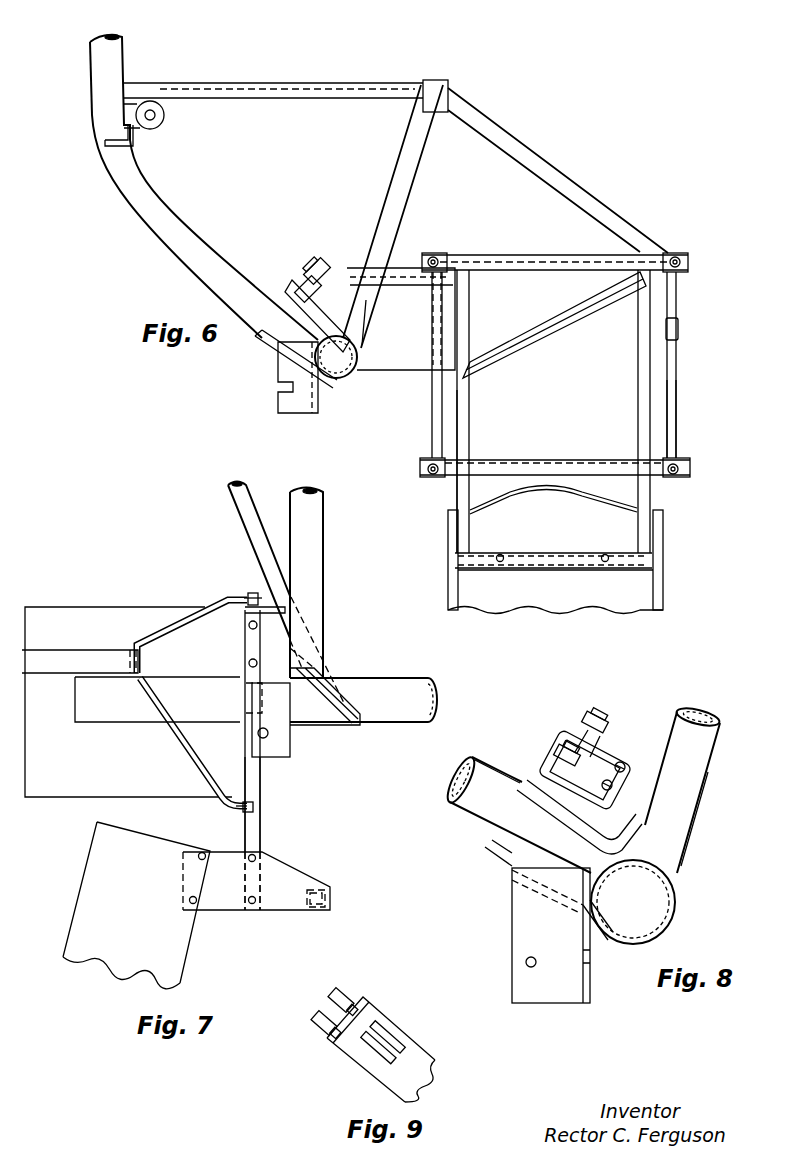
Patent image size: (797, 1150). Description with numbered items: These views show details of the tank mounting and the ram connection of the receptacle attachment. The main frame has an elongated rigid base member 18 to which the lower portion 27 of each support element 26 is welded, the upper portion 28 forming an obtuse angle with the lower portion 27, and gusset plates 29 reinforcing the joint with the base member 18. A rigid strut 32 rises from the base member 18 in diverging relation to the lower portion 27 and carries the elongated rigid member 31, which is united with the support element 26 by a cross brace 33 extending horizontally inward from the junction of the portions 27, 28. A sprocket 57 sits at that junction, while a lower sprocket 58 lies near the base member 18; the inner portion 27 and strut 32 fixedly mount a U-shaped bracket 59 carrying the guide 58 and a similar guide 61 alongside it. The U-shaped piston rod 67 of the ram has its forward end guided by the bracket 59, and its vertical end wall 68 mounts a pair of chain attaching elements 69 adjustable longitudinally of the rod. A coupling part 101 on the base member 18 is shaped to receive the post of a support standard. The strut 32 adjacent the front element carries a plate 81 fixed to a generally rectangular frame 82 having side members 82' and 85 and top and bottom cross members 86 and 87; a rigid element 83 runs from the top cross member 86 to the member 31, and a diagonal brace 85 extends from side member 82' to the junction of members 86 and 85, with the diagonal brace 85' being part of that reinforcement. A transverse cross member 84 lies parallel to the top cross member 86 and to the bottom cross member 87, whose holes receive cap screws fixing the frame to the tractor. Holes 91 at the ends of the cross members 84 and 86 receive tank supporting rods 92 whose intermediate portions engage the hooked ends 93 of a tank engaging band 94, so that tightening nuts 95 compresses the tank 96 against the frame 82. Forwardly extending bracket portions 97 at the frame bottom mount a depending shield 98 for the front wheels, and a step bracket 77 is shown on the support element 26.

In FIG. 6, the base member 18 is at (346, 380).
In FIG. 7, the base member 18 is at (410, 678).
In FIG. 8, the base member 18 is at (676, 900).
In FIG. 7, the support element 26 is at (316, 519).
In FIG. 8, the support element 26 is at (509, 827).
In FIG. 6, the lower portion 27 is at (192, 276).
In FIG. 7, the lower portion 27 is at (323, 592).
In FIG. 8, the lower portion 27 is at (470, 823).
In FIG. 6, the upper portion 28 is at (123, 45).
In FIG. 6, the gusset plate 29 is at (372, 310).
In FIG. 7, the gusset plate 29 is at (330, 668).
In FIG. 8, the gusset plate 29 is at (695, 820).
In FIG. 6, the elongated rigid member 31 is at (441, 80).
In FIG. 6, the strut 32 is at (394, 184).
In FIG. 7, the strut 32 is at (246, 522).
In FIG. 8, the strut 32 is at (712, 752).
In FIG. 6, the cross brace 33 is at (318, 98).
In FIG. 6, the sprocket 57 is at (166, 116).
In FIG. 6, the sprocket 58 is at (312, 262).
In FIG. 8, the sprocket 58 is at (580, 720).
In FIG. 8, the U-shaped bracket 59 is at (630, 750).
In FIG. 8, the guide 61 is at (558, 745).
In FIG. 8, the piston rod 67 is at (632, 780).
In FIG. 9, the piston rod 67 is at (418, 1045).
In FIG. 8, the end wall 68 is at (605, 792).
In FIG. 9, the end wall 68 is at (355, 1003).
In FIG. 8, the attaching element 69 is at (623, 773).
In FIG. 9, the attaching element 69 is at (322, 1006).
In FIG. 6, the step bracket 77 is at (108, 152).
In FIG. 6, the plate 81 is at (398, 267).
In FIG. 7, the plate 81 is at (270, 616).
In FIG. 6, the rectangular frame 82 is at (553, 411).
In FIG. 7, the rectangular frame 82 is at (274, 731).
In FIG. 6, the side member 82' is at (489, 471).
In FIG. 7, the side member 82' is at (276, 833).
In FIG. 6, the rigid element 83 is at (566, 178).
In FIG. 6, the transverse cross member 84 is at (554, 460).
In FIG. 7, the transverse cross member 84 is at (240, 810).
In FIG. 6, the diagonal brace 85 is at (559, 438).
In FIG. 6, the diagonal cross brace 85' is at (554, 325).
In FIG. 6, the top cross member 86 is at (549, 257).
In FIG. 7, the top cross member 86 is at (250, 592).
In FIG. 6, the bottom cross member 87 is at (576, 553).
In FIG. 7, the bottom cross member 87 is at (300, 910).
In FIG. 6, the hole 91 is at (436, 257).
In FIG. 6, the tank supporting rod 92 is at (678, 370).
In FIG. 7, the tank supporting rod 92 is at (185, 745).
In FIG. 6, the hooked end 93 is at (680, 327).
In FIG. 7, the hooked end 93 is at (140, 658).
In FIG. 7, the tank engaging band 94 is at (89, 650).
In FIG. 6, the nut 95 is at (447, 259).
In FIG. 7, the nut 95 is at (262, 597).
In FIG. 6, the tank 96 is at (668, 403).
In FIG. 7, the tank 96 is at (131, 606).
In FIG. 6, the bracket portion 97 is at (449, 531).
In FIG. 7, the bracket portion 97 is at (218, 910).
In FIG. 6, the shield 98 is at (650, 587).
In FIG. 7, the shield 98 is at (88, 862).
In FIG. 6, the coupling part 101 is at (282, 407).
In FIG. 8, the coupling part 101 is at (513, 923).